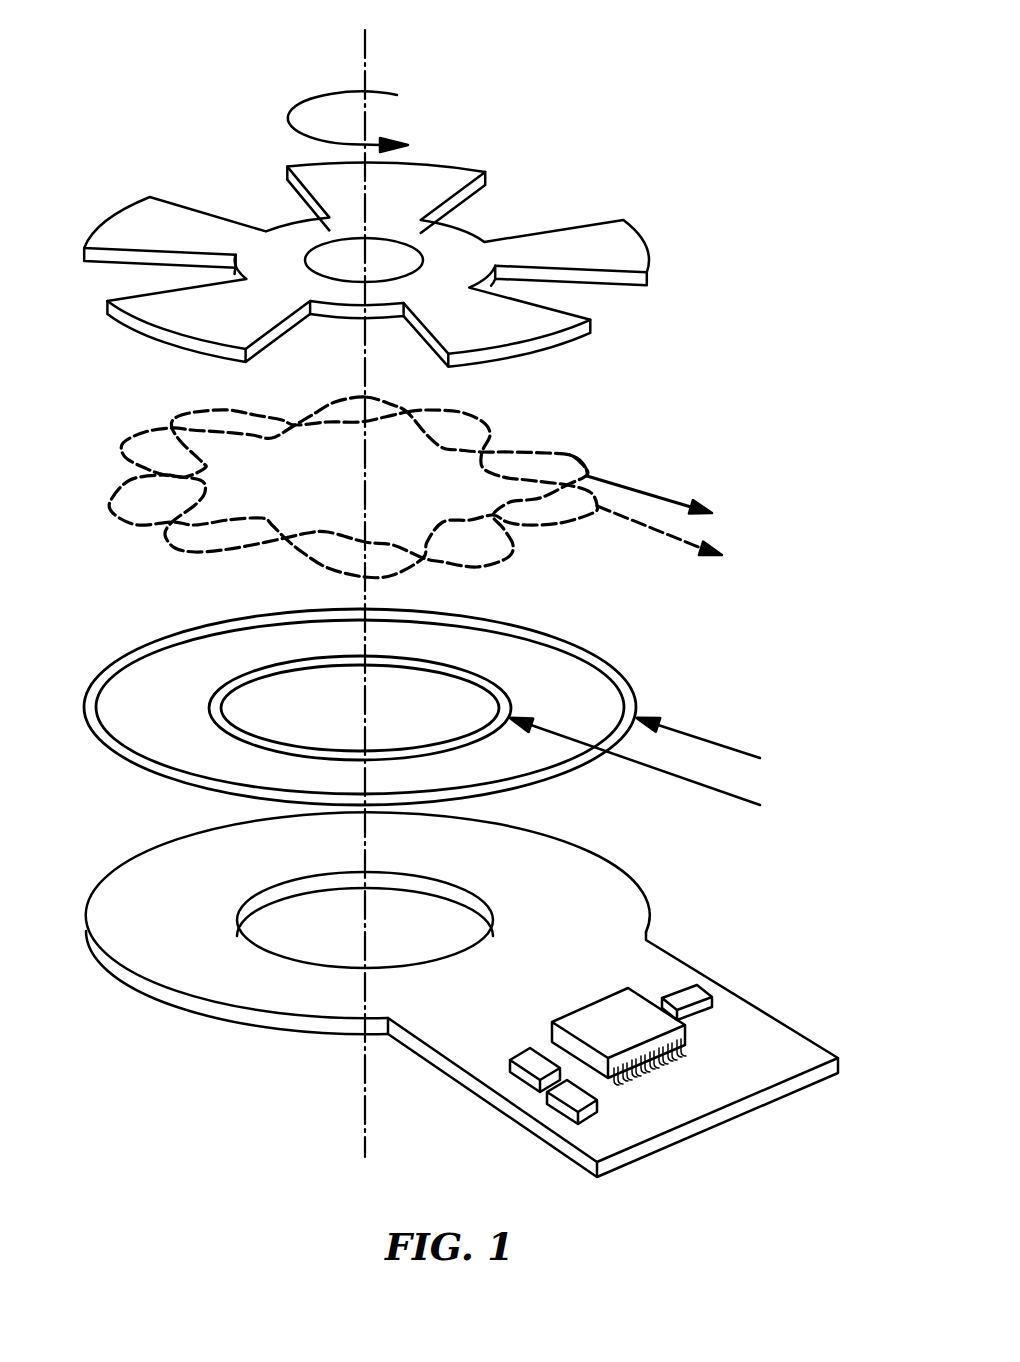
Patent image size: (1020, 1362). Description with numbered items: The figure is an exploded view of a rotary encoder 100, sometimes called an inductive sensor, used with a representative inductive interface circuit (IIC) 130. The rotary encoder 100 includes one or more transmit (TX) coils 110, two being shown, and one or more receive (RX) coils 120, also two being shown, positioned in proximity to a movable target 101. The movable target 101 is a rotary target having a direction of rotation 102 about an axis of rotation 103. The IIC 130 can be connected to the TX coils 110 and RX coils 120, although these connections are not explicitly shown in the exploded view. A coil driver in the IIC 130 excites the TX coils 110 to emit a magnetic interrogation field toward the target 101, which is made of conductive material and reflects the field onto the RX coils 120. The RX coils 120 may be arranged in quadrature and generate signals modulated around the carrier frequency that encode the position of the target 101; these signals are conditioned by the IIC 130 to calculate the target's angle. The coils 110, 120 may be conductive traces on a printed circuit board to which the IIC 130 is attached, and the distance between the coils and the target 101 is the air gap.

The rotary encoder 100 is at (614, 149).
The movable target 101 is at (642, 248).
The direction of rotation 102 is at (293, 103).
The axis of rotation 103 is at (365, 62).
The transmit (TX) coils 110 is at (590, 662).
The receive (RX) coils 120 is at (575, 452).
The inductive interface circuit (IIC) 130 is at (620, 1017).